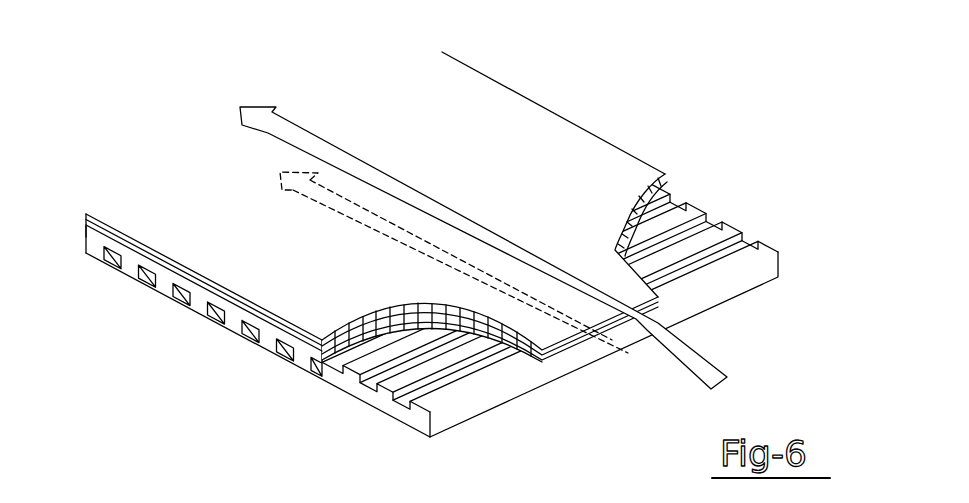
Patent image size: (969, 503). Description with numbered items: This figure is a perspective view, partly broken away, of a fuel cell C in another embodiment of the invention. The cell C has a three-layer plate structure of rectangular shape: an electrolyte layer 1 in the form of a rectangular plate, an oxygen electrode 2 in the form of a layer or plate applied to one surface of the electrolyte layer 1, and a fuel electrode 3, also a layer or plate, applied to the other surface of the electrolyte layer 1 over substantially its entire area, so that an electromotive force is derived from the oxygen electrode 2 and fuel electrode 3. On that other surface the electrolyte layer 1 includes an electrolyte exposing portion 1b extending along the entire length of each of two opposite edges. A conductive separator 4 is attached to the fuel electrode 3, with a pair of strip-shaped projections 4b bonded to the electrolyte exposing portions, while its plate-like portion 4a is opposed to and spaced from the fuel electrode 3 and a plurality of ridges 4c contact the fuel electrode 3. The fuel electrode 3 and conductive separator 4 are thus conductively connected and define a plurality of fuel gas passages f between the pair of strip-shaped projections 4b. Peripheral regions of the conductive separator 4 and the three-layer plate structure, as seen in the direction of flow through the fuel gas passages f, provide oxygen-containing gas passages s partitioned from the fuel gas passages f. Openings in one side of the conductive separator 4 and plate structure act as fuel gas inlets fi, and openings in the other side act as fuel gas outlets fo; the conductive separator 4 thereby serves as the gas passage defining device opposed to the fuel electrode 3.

The electrolyte exposing portion 1b is at (100, 238).
The strip-shaped projections 4b is at (97, 247).
The plate-like portion 4a is at (180, 303).
The fuel gas passages f is at (259, 337).
The conductive separator 4 is at (268, 360).
The fuel gas inlets fi is at (291, 349).
The ridges 4c is at (398, 398).
The fuel electrode 3 is at (262, 305).
The electrolyte layer 1 is at (300, 322).
The oxygen electrode 2 is at (308, 340).
The fuel cell C is at (579, 91).
The fuel gas outlets fo is at (677, 208).
The oxygen-containing gas passages s is at (283, 123).